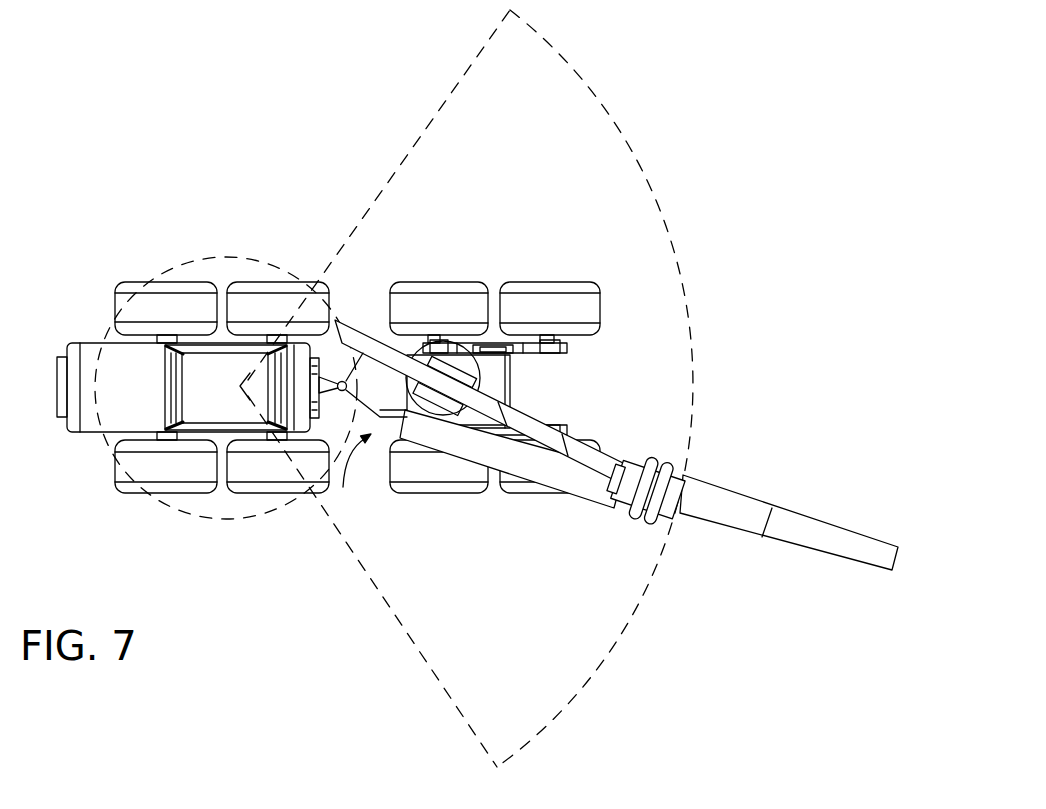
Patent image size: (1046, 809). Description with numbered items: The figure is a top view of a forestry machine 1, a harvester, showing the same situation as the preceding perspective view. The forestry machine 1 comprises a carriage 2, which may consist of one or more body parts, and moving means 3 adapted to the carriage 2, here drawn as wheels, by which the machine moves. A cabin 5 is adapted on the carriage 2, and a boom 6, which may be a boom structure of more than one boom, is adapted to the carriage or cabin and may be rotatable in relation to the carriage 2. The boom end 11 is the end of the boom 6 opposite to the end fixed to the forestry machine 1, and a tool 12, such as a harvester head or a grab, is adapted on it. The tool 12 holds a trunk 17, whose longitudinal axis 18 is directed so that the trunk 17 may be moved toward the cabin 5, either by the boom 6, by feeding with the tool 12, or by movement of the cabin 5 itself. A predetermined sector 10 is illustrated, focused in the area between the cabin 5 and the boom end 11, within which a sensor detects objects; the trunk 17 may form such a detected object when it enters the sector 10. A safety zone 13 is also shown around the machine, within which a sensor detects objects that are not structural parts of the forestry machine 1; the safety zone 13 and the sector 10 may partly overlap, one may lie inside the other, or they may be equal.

The forestry machine 1 is at (705, 328).
The carriage 2 is at (357, 485).
The moving means 3 is at (117, 483).
The cabin 5 is at (228, 365).
The boom 6 is at (380, 348).
The sector 10 is at (608, 172).
The boom end 11 is at (636, 455).
The tool 12 is at (665, 472).
The safety zone 13 is at (107, 328).
The trunk 17 is at (720, 510).
The longitudinal axis 18 is at (338, 381).